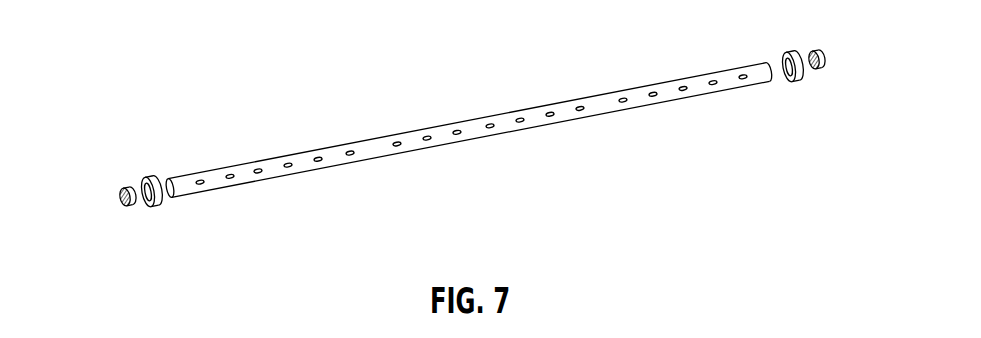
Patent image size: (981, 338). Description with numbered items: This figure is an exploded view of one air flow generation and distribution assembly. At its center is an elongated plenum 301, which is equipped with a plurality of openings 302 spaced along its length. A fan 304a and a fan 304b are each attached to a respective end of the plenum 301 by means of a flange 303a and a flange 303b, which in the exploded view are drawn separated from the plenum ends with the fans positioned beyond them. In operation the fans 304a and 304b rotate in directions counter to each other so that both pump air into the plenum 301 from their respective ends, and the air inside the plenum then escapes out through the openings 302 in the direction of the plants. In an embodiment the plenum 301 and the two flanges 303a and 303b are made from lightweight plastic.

The plenum 301 is at (328, 150).
The openings 302 is at (397, 145).
The flange 303a is at (145, 181).
The fan 304a is at (118, 201).
The flange 303b is at (803, 78).
The fan 304b is at (826, 56).